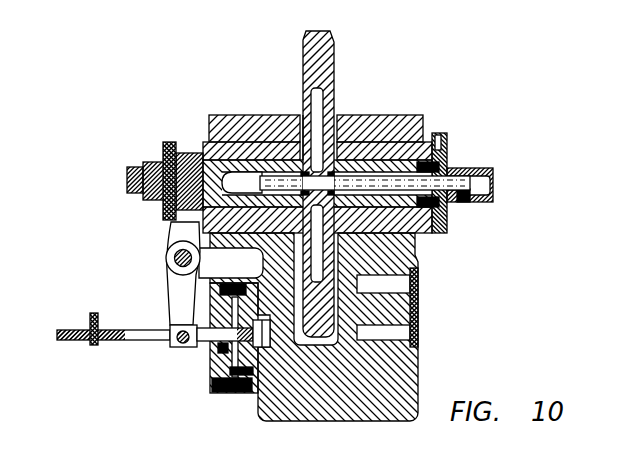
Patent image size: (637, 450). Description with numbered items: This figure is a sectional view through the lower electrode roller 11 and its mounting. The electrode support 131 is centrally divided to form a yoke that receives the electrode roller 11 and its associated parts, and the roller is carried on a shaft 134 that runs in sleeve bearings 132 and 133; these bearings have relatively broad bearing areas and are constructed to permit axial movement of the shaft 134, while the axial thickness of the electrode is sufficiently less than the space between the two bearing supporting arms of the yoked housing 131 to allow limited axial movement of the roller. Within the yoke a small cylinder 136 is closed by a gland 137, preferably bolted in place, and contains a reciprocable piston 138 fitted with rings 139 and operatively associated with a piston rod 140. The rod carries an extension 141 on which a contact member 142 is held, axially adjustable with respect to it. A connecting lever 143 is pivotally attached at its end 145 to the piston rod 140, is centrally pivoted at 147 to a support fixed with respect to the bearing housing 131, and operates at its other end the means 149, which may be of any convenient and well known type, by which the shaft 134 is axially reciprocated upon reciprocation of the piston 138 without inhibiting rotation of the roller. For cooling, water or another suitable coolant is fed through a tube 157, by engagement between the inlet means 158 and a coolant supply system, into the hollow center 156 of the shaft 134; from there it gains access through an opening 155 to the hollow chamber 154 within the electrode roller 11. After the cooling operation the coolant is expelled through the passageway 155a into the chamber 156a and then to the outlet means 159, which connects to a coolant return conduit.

The electrode roller 11 is at (318, 225).
The electrode support 131 is at (424, 360).
The sleeve bearing 132 is at (426, 137).
The sleeve bearing 133 is at (270, 150).
The shaft 134 is at (428, 231).
The cylinder 136 is at (253, 376).
The gland 137 is at (220, 365).
The piston 138 is at (220, 390).
The rings 139 is at (235, 393).
The piston rod 140 is at (208, 338).
The extension 141 is at (148, 333).
The contact member 142 is at (92, 317).
The connecting lever 143 is at (177, 287).
The lever end 145 is at (167, 347).
The central pivot 147 is at (175, 257).
The shaft reciprocating means 149 is at (163, 147).
The hollow chamber 154 is at (317, 103).
The opening 155 is at (302, 127).
The passageway 155a is at (404, 244).
The hollow center 156 is at (238, 176).
The chamber 156a is at (350, 193).
The tube 157 is at (243, 141).
The inlet means 158 is at (483, 201).
The outlet means 159 is at (461, 201).